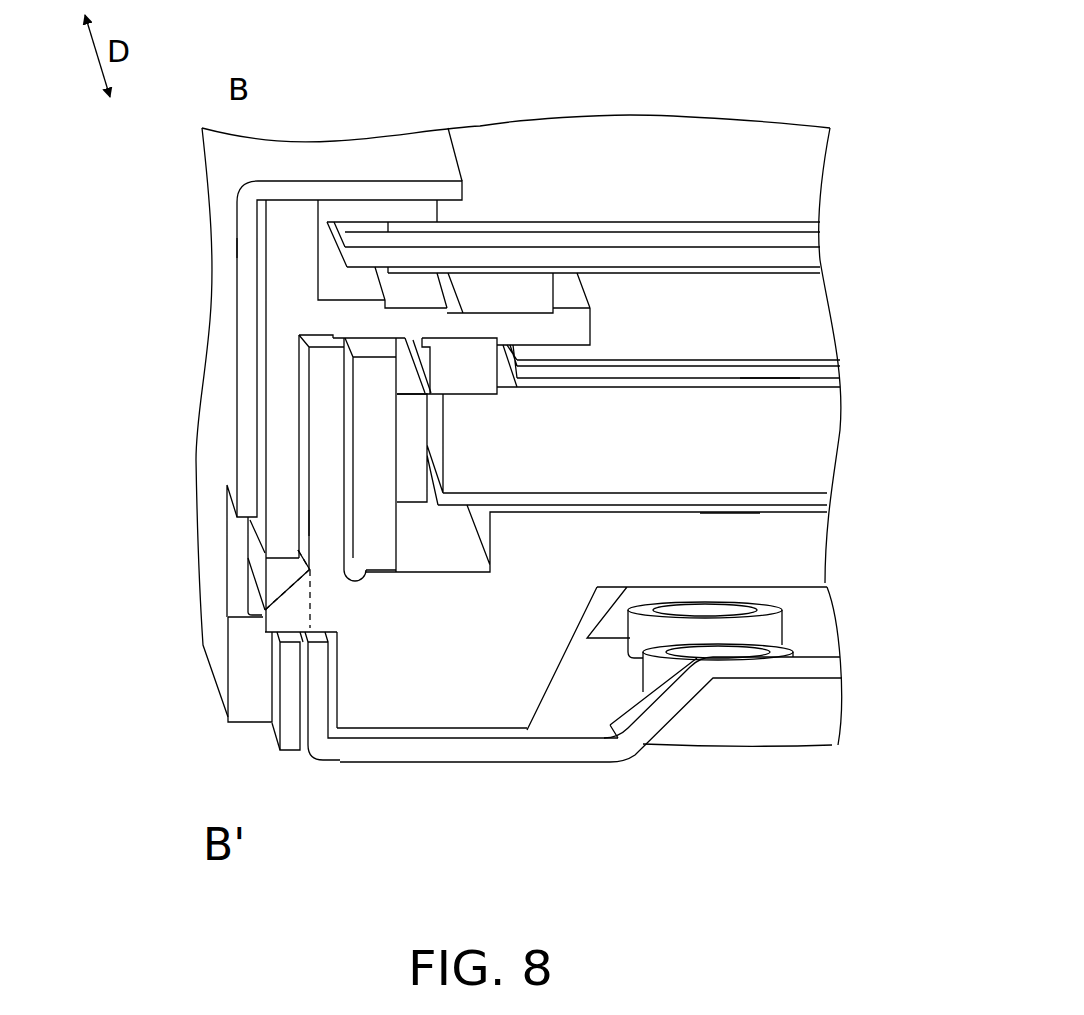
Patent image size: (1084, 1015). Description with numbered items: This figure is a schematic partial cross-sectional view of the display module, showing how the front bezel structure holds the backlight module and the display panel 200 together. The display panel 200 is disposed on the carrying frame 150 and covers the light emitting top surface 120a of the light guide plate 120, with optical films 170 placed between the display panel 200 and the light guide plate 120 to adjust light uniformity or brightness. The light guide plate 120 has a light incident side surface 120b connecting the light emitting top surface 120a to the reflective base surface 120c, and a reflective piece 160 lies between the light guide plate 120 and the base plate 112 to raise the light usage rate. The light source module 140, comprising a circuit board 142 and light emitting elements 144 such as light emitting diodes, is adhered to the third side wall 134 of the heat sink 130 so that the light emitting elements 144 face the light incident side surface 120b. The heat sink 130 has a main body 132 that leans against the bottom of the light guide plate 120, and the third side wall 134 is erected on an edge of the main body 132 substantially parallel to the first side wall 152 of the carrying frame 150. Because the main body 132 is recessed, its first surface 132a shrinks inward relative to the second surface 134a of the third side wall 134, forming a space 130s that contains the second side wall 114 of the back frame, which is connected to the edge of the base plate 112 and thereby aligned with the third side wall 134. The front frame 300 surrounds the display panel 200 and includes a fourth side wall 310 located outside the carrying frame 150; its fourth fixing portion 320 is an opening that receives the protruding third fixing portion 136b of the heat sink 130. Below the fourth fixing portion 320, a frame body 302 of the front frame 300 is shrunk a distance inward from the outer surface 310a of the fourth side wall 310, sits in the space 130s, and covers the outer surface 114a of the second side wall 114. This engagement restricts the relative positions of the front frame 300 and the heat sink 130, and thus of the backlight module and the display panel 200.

The front frame 300 is at (227, 156).
The fourth side wall 310 is at (245, 210).
The outer surface of the fourth side wall 310a is at (233, 248).
The carrying frame 150 is at (272, 290).
The first side wall 152 is at (278, 450).
The display panel 200 is at (855, 223).
The light source module 140 is at (118, 327).
The circuit board 142 is at (370, 380).
The light emitting elements 144 is at (408, 418).
The light incident side surface 120b is at (441, 437).
The light guide plate 120 is at (855, 392).
The reflective piece 160 is at (827, 500).
The reflective base surface 120c is at (768, 496).
The optical films 170 is at (855, 360).
The light emitting top surface 120a is at (780, 383).
The third side wall 134 is at (320, 484).
The second surface 134a is at (308, 523).
The fourth fixing portion 320 is at (236, 611).
The third fixing portion 136b is at (282, 622).
The frame body 302 is at (290, 658).
The second side wall 114 is at (298, 702).
The outer surface of the second side wall 114a is at (275, 728).
The main body 132 is at (460, 715).
The first surface 132a is at (290, 747).
The space 130s is at (360, 655).
The heat sink 130 is at (815, 575).
The base plate 112 is at (527, 752).